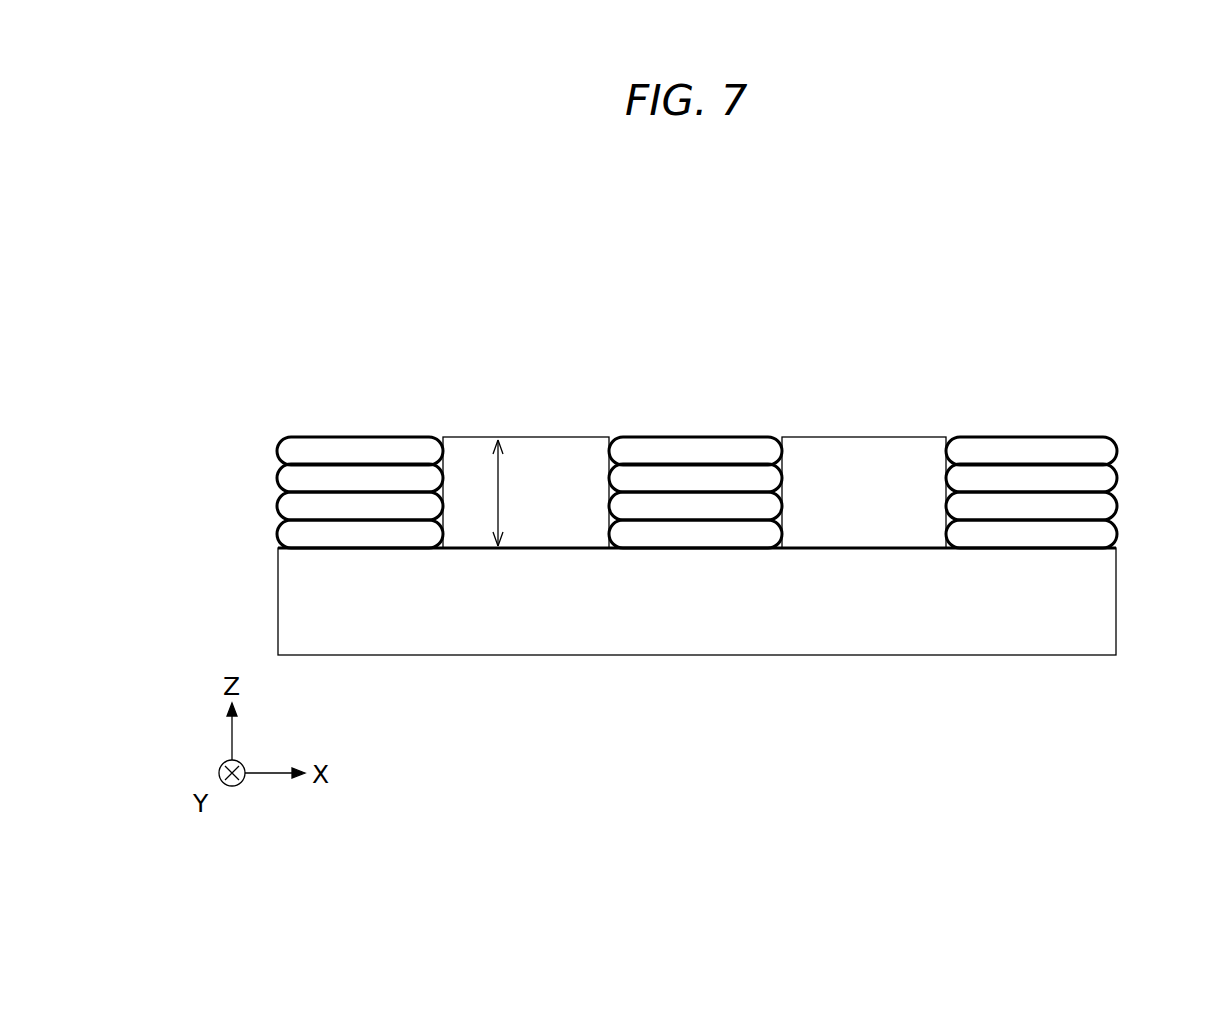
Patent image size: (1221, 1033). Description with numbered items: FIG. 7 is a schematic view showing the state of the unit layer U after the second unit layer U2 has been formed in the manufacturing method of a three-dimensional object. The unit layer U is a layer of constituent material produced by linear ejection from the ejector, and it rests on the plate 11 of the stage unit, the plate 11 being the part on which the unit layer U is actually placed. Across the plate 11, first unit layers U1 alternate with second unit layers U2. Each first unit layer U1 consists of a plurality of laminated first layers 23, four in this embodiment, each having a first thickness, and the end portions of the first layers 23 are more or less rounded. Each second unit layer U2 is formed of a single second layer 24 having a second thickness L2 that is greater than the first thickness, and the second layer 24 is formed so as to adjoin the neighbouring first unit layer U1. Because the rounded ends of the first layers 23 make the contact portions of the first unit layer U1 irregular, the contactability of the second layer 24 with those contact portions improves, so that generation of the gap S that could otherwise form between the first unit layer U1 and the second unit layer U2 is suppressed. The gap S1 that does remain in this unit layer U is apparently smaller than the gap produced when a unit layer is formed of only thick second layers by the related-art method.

The unit layer U is at (1125, 248).
The first unit layer U1 is at (674, 413).
The second unit layer U2 is at (686, 415).
The first layer 23 is at (328, 448).
The second layer 24 is at (528, 462).
The plate 11 is at (580, 632).
The gap S is at (697, 653).
The gap S1 is at (447, 549).
The second thickness L2 is at (517, 493).